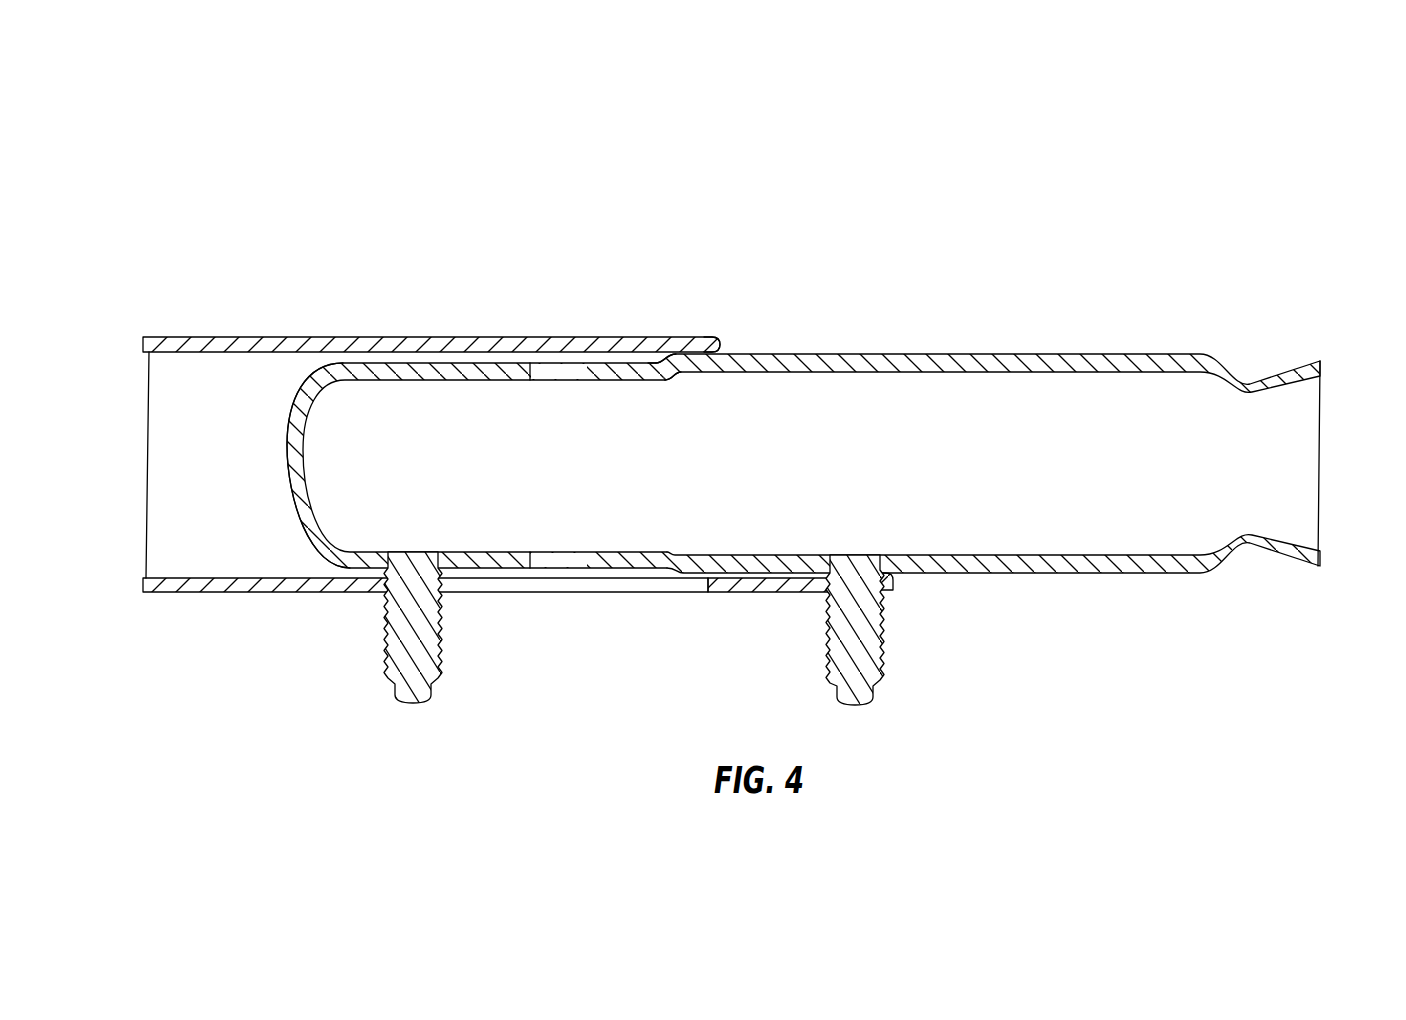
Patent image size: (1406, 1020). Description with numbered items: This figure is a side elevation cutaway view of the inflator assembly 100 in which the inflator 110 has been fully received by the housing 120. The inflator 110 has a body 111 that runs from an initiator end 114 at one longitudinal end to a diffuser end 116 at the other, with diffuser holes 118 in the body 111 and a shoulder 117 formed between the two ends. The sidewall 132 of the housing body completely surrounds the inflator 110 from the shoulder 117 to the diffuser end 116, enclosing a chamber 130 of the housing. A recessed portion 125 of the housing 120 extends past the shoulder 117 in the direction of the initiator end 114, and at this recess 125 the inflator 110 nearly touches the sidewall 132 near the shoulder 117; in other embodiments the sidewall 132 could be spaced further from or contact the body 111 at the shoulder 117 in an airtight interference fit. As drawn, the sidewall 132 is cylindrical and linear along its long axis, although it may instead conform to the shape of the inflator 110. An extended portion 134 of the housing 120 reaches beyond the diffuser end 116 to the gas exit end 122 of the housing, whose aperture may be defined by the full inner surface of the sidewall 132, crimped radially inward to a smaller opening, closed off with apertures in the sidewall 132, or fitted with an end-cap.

The inflator assembly 100 is at (597, 282).
The inflator 110 is at (1017, 355).
The body 111 is at (957, 355).
The initiator end of inflator 114 is at (1318, 458).
The diffuser end of inflator 116 is at (297, 515).
The shoulder 117 is at (657, 355).
The diffuser holes 118 is at (553, 375).
The housing 120 is at (315, 337).
The gas exit end of housing 122 is at (148, 463).
The recessed portion of inflator housing 125 is at (721, 346).
The chamber of housing 130 is at (165, 388).
The sidewall of housing body 132 is at (420, 337).
The extended portion 134 is at (787, 593).